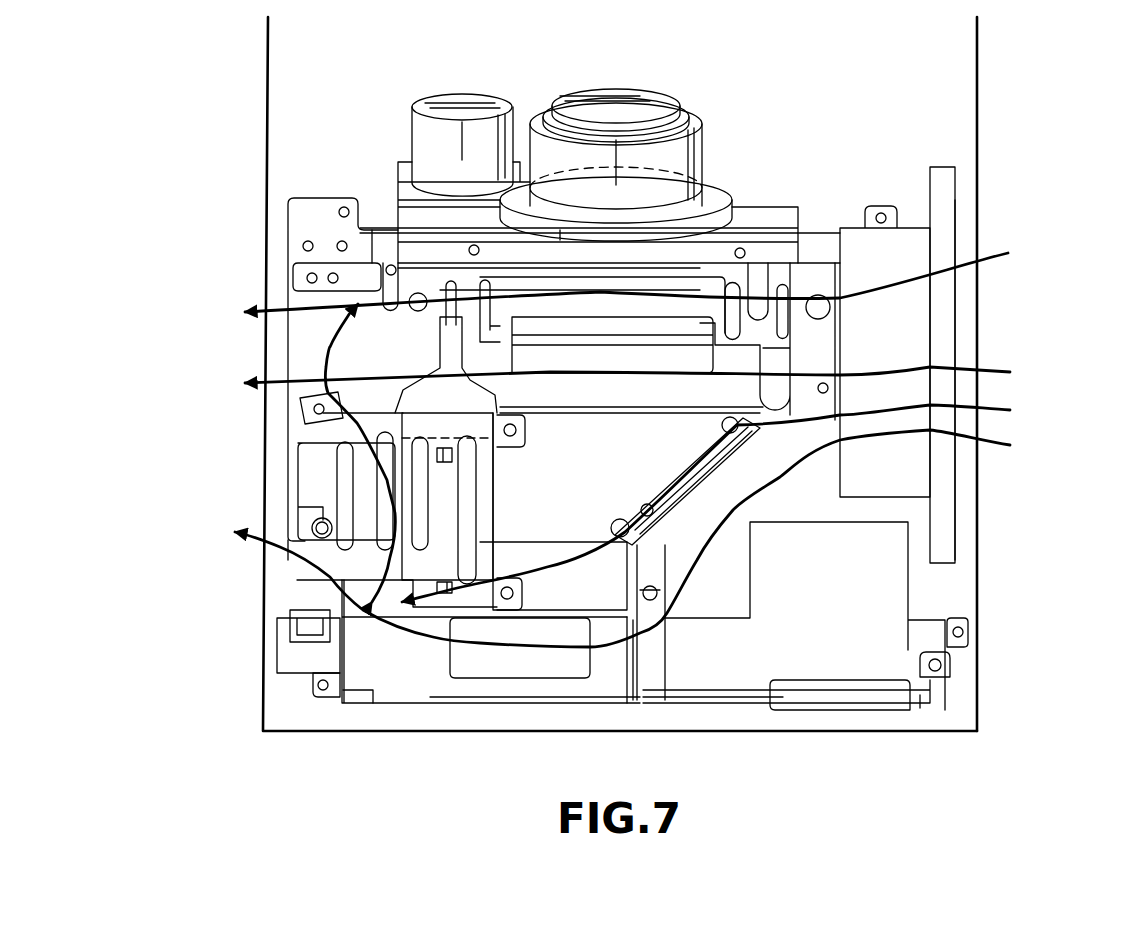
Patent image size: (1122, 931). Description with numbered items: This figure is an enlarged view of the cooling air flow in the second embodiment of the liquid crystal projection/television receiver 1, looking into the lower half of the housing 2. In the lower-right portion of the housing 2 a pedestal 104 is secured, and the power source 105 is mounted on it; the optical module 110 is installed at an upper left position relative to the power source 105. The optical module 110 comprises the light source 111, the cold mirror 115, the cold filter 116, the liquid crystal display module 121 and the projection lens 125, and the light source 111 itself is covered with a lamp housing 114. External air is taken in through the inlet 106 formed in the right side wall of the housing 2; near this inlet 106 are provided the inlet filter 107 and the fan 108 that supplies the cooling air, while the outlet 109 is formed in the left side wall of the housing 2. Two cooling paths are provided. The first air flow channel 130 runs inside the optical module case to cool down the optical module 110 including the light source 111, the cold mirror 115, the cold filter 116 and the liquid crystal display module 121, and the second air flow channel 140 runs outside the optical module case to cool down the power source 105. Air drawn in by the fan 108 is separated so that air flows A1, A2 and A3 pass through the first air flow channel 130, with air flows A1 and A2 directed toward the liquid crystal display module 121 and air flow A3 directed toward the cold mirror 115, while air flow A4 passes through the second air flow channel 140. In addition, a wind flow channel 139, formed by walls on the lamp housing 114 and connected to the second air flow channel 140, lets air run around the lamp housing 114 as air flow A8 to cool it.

The liquid crystal projection/television receiver 1 is at (262, 160).
The housing 2 is at (983, 96).
The pedestal 104 is at (952, 687).
The power source 105 is at (892, 545).
The inlet 106 is at (982, 298).
The inlet filter 107 is at (947, 327).
The fan 108 is at (915, 245).
The outlet 109 is at (275, 350).
The optical module 110 is at (787, 192).
The light source 111 is at (437, 550).
The lamp housing 114 is at (313, 467).
The cold mirror 115 is at (637, 590).
The cold filter 116 is at (627, 410).
The liquid crystal display module 121 is at (677, 318).
The projection lens 125 is at (623, 100).
The first air flow channel 130 is at (592, 466).
The wind flow channel 139 is at (378, 500).
The second air flow channel 140 is at (745, 602).
The air flow A1 is at (649, 275).
The air flow A2 is at (649, 371).
The air flow A3 is at (727, 499).
The air flow A4 is at (644, 538).
The air flow A8 is at (312, 568).